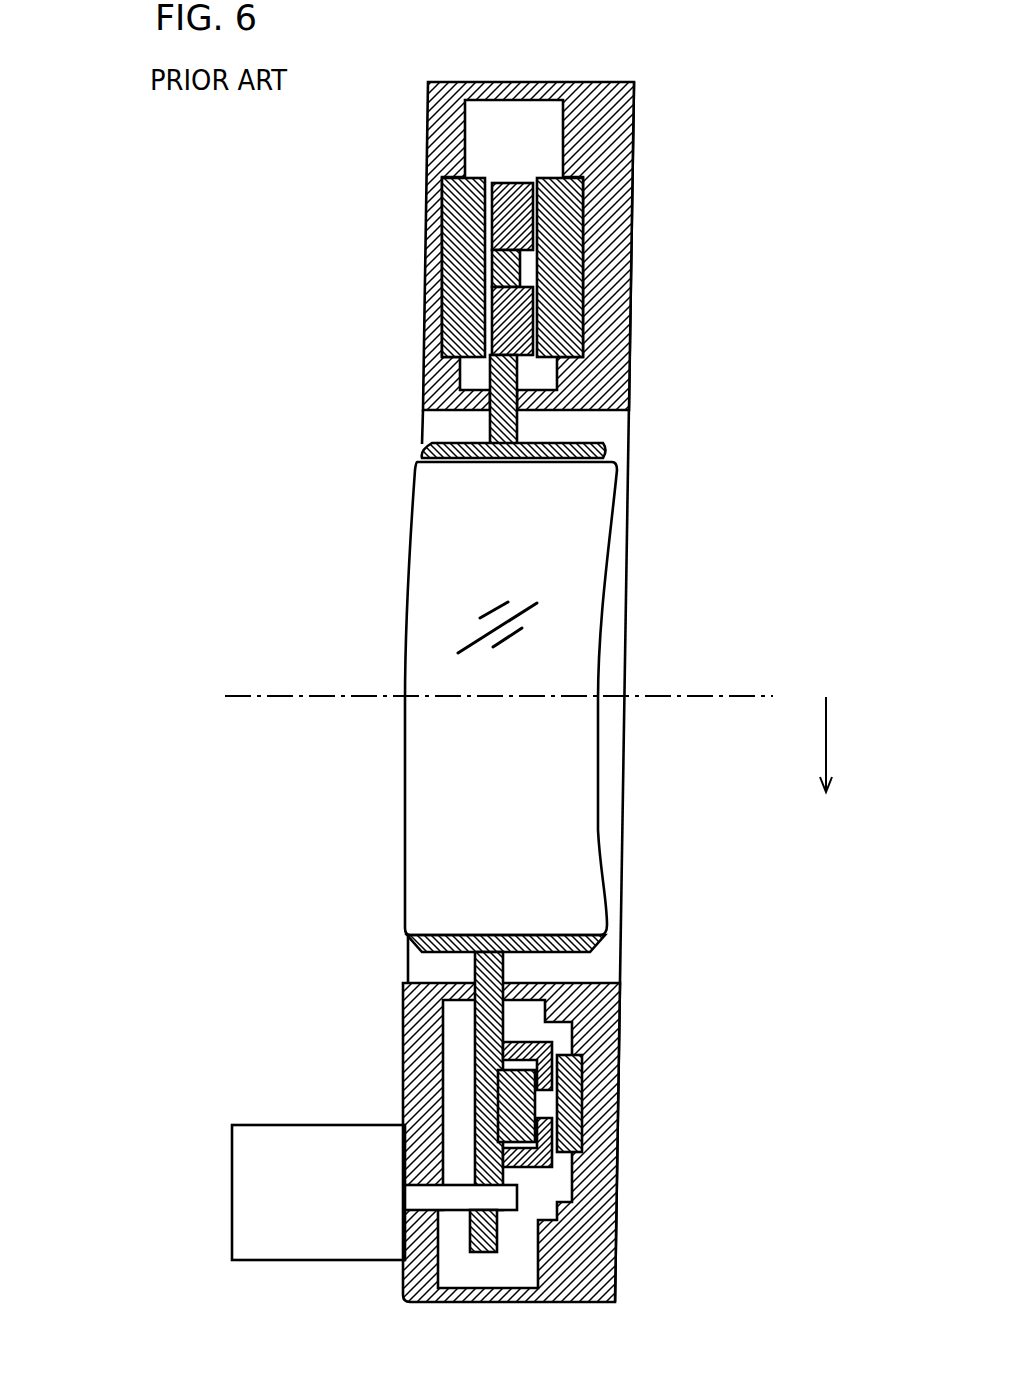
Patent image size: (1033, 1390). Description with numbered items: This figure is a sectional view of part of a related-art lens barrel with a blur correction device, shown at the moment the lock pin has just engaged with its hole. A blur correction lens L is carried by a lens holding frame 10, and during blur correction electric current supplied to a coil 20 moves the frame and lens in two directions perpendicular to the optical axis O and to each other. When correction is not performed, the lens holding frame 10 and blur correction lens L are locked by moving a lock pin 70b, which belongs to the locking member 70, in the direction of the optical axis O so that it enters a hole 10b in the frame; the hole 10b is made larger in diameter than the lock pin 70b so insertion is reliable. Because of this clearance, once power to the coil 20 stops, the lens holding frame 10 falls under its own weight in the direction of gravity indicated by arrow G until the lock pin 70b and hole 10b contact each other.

The lens holding frame 10 is at (605, 456).
The hole 10b is at (503, 1180).
The coil 20 is at (522, 182).
The position sensor 70 is at (243, 1208).
The lock pin 70b is at (458, 1205).
The blur correction lens L is at (573, 857).
The optical axis O is at (273, 694).
The arrow G is at (829, 725).